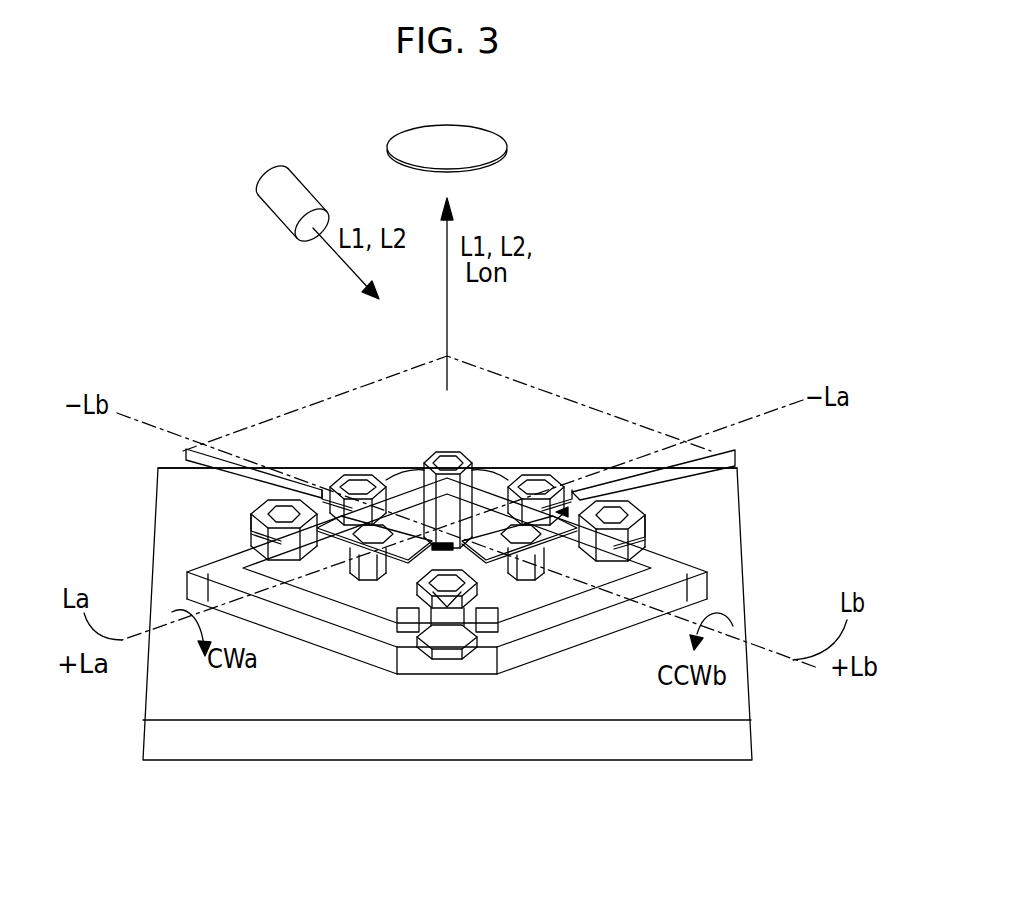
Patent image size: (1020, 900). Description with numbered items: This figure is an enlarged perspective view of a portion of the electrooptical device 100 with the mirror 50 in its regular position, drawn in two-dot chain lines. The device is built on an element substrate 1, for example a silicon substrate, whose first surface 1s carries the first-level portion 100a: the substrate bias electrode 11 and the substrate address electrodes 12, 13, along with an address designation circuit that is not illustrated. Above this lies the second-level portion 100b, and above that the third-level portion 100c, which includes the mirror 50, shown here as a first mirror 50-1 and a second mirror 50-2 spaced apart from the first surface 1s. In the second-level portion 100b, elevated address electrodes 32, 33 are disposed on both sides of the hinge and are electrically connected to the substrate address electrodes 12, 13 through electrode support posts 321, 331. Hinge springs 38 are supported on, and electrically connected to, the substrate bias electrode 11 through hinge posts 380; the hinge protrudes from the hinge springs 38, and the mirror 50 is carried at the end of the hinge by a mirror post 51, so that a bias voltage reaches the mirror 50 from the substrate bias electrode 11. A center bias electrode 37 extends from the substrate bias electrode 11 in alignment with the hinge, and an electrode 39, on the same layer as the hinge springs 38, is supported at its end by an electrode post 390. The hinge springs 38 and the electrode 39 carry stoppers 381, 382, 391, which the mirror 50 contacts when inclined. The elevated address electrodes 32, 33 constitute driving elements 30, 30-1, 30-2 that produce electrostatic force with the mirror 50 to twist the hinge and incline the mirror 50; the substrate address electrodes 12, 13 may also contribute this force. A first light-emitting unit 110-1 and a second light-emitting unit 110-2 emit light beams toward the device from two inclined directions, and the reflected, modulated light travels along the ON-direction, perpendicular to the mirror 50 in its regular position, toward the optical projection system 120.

The element substrate 1 is at (733, 747).
The first surface of the element substrate 1s is at (687, 711).
The substrate bias electrode 11 is at (243, 547).
The substrate address electrode 12 is at (557, 613).
The substrate address electrode 13 is at (307, 608).
The driving element 30 is at (591, 706).
The driving element 30-1 is at (365, 706).
The driving element 30-2 is at (673, 592).
The elevated address electrode 32 is at (673, 592).
The elevated address electrode 33 is at (365, 706).
The electrode support post 321 is at (557, 612).
The electrode support post 331 is at (378, 573).
The center bias electrode 37 is at (553, 603).
The hinge spring 38 is at (508, 473).
The hinge post 380 is at (283, 543).
The stopper 381 is at (640, 521).
The stopper 382 is at (252, 522).
The electrode 39 is at (474, 701).
The electrode post 390 is at (468, 615).
The stopper 391 is at (449, 605).
The mirror 50 is at (498, 417).
The first mirror 50-1 is at (498, 417).
The second mirror 50-2 is at (628, 410).
The mirror post 51 is at (468, 475).
The electrooptical device 100 is at (465, 557).
The first-level portion 100a is at (465, 580).
The second-level portion 100b is at (465, 564).
The third-level portion 100c is at (403, 564).
The first light-emitting unit 110-1 is at (240, 204).
The second light-emitting unit 110-2 is at (265, 185).
The optical projection system 120 is at (504, 150).